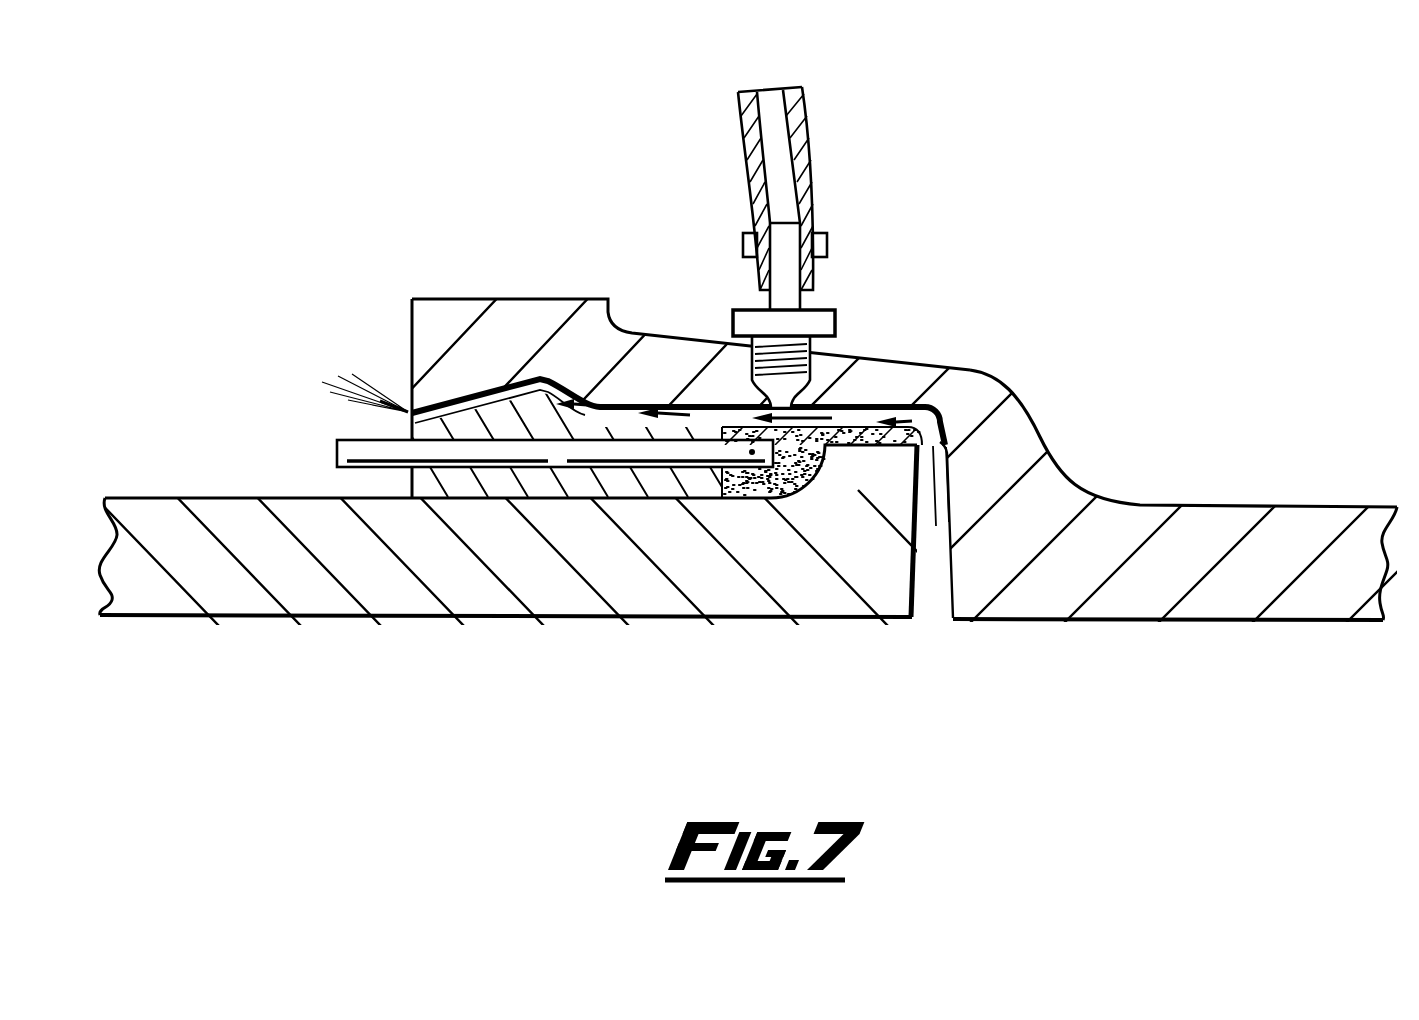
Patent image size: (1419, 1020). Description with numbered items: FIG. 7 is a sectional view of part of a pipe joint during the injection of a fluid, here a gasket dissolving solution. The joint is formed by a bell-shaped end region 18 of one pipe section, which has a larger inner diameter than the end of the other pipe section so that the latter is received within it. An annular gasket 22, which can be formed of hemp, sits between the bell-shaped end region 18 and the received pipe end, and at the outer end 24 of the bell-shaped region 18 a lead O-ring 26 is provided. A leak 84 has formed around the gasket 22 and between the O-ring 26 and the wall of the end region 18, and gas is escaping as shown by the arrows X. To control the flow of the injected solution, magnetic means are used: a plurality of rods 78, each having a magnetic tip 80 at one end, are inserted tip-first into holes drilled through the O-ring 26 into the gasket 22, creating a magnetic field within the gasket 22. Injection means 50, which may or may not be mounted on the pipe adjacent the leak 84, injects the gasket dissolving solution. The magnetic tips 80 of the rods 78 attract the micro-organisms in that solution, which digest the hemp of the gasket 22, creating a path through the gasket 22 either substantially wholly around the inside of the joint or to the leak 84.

The bell-shaped end region 18 is at (450, 315).
The annular gasket 22 is at (870, 446).
The outer end of the bell-shaped region 24 is at (412, 327).
The lead O-ring 26 is at (407, 424).
The injection means 50 is at (838, 161).
The rods 78 is at (515, 457).
The magnetic tips 80 is at (752, 455).
The leak 84 is at (617, 392).
The arrows indicating gas leakage X is at (932, 612).